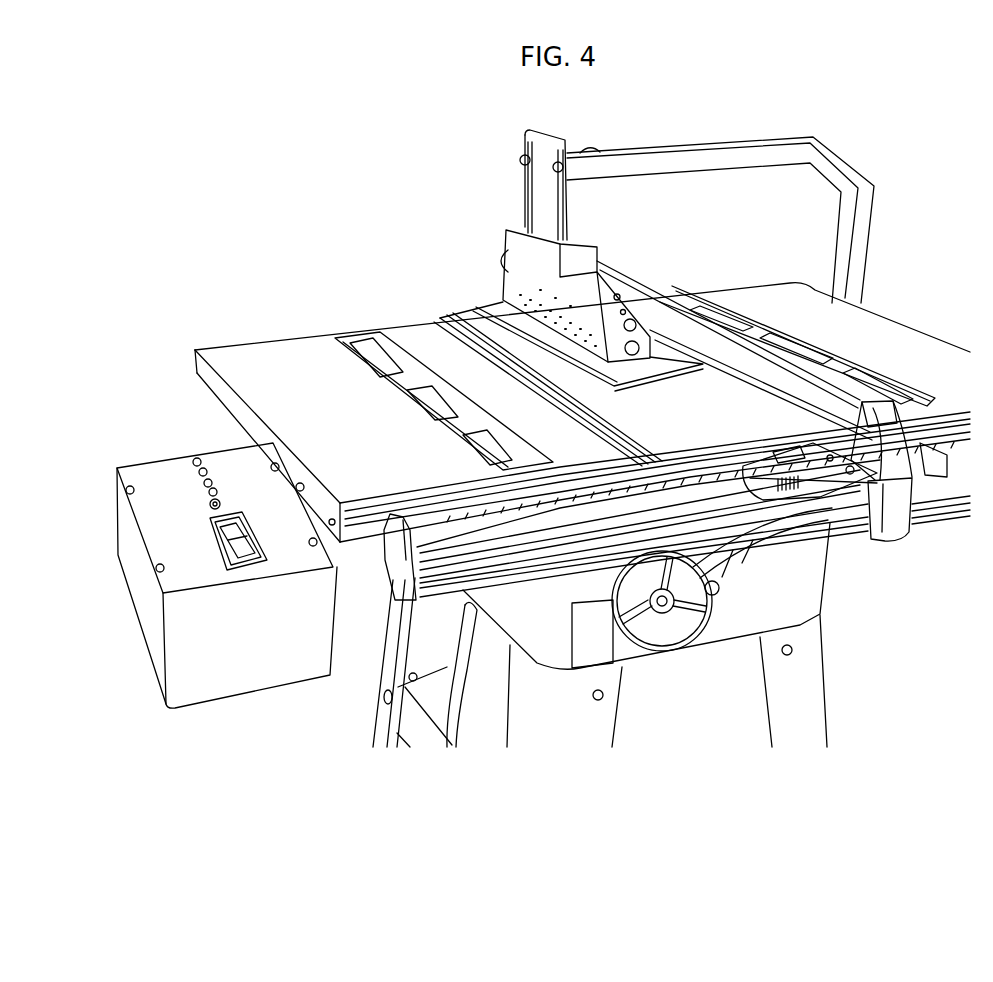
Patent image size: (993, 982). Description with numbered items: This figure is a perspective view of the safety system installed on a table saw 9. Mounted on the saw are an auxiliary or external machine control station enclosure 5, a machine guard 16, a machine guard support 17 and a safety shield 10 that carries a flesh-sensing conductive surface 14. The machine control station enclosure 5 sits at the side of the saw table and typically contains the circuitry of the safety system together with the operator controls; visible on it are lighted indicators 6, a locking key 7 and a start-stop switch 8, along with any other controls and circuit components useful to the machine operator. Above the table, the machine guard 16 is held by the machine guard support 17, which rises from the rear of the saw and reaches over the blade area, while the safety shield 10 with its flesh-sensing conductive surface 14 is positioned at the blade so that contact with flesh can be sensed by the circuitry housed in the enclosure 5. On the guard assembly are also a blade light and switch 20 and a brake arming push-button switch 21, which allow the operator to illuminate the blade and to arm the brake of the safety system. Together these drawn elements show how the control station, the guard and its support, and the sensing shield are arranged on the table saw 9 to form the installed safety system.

The machine control station enclosure 5 is at (216, 516).
The lighted indicators 6 is at (197, 463).
The locking key 7 is at (210, 497).
The start-stop switch 8 is at (213, 538).
The table saw 9 is at (280, 338).
The safety shield 10 is at (549, 234).
The flesh-sensing conductive surface 14 is at (473, 312).
The machine guard 16 is at (518, 257).
The machine guard support 17 is at (847, 172).
The blade light and switch 20 is at (634, 320).
The brake arming push-button switch 21 is at (638, 344).